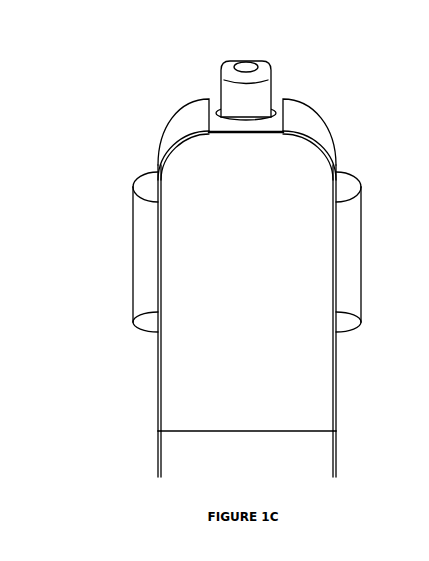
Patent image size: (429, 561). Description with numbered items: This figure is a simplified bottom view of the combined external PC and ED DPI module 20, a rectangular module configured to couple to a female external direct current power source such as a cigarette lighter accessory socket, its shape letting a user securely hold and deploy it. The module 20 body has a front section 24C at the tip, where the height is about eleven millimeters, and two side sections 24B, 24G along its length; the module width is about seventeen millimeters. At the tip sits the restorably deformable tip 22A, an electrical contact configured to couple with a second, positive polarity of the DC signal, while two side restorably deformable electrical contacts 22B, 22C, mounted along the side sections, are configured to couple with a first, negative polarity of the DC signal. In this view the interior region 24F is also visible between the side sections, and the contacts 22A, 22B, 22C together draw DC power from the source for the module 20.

The combined external PC and ED DPI module 20 is at (397, 460).
The restorably deformable tip 22A is at (265, 88).
The side restorably deformable electrical contact 22B is at (350, 250).
The side restorably deformable electrical contact 22C is at (143, 253).
The side section 24B is at (336, 358).
The front section 24C is at (177, 123).
The inner wall / interior 24F is at (248, 373).
The side section 24G is at (155, 388).